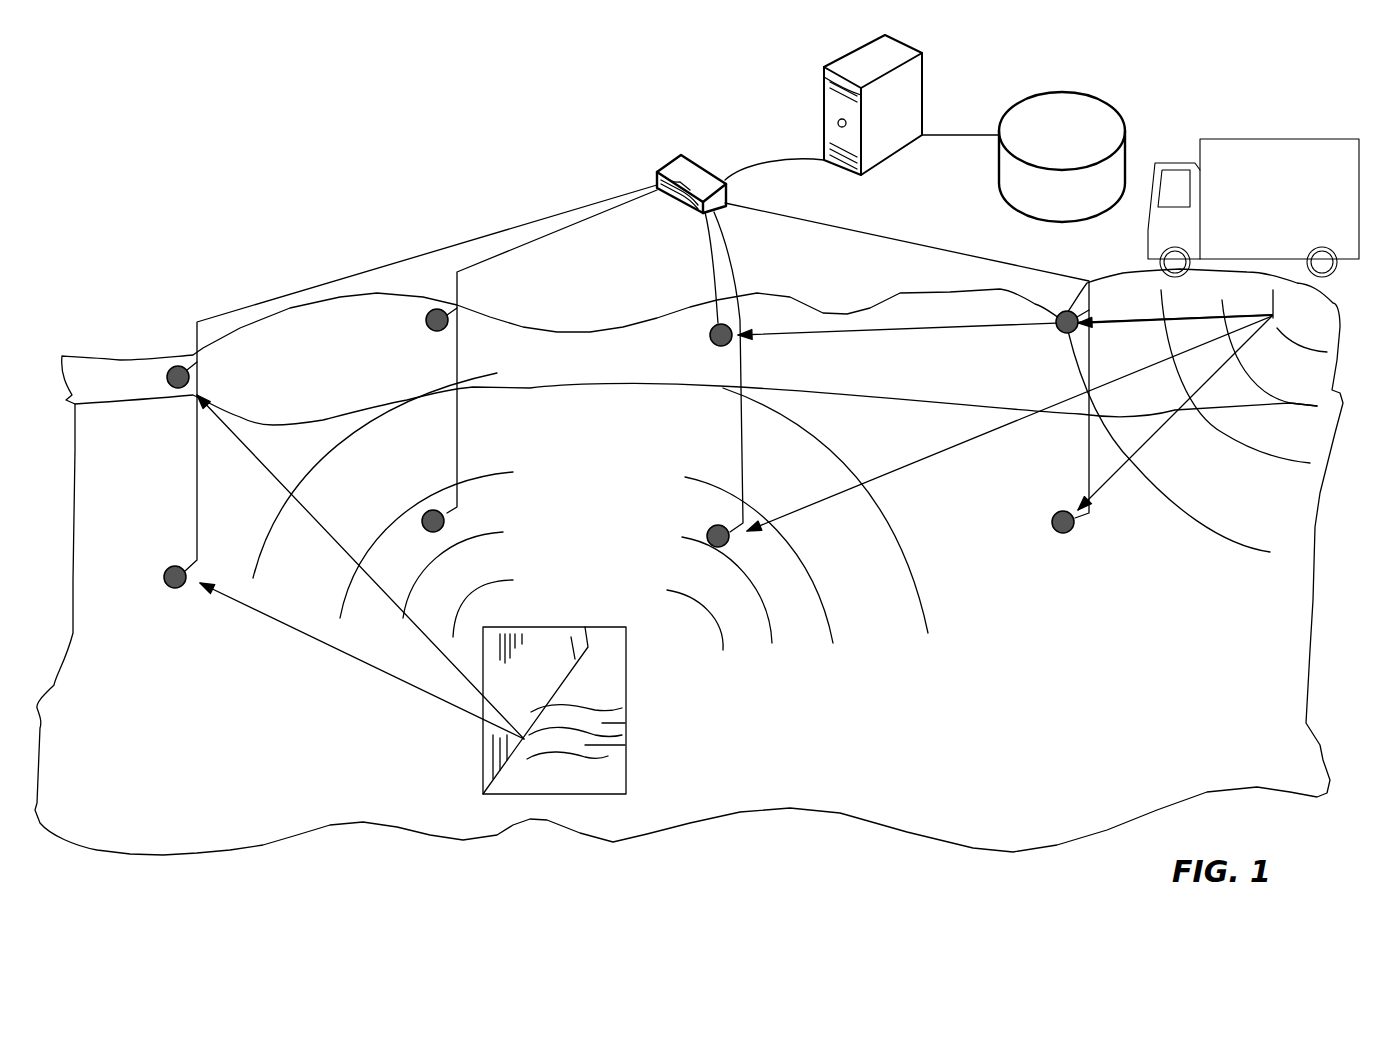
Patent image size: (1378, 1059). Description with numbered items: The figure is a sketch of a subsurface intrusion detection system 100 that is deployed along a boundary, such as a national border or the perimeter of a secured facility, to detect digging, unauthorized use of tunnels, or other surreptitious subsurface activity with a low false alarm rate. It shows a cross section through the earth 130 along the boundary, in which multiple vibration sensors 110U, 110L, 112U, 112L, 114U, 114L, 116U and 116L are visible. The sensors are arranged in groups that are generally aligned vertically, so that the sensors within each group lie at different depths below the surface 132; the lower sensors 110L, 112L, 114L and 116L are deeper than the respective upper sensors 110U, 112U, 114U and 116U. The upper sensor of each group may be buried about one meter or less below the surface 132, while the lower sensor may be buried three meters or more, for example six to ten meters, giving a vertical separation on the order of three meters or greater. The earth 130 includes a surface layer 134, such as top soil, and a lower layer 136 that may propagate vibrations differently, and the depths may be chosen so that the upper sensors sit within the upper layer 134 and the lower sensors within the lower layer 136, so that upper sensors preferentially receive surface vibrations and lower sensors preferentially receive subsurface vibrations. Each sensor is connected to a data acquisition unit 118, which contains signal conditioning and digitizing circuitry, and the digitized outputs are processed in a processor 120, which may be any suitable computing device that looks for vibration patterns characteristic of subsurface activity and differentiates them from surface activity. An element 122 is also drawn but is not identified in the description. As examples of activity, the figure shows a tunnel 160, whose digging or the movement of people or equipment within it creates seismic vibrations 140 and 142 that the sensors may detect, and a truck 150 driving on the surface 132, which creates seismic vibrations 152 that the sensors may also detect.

The subsurface intrusion detection system 100 is at (367, 141).
The vibration sensor 110U is at (178, 392).
The vibration sensor 110L is at (183, 589).
The vibration sensor 112U is at (424, 321).
The vibration sensor 112L is at (447, 523).
The vibration sensor 114U is at (716, 323).
The vibration sensor 114L is at (714, 525).
The vibration sensor 116U is at (1057, 312).
The vibration sensor 116L is at (1064, 534).
The data acquisition unit 118 is at (679, 155).
The processor 120 is at (897, 152).
The database 122 is at (1060, 92).
The earth 130 is at (118, 356).
The surface 132 is at (1123, 282).
The surface layer 134 is at (990, 382).
The lower layer 136 is at (1010, 464).
The seismic vibrations 140 is at (403, 618).
The seismic vibrations 142 is at (835, 643).
The truck 150 is at (1251, 140).
The seismic vibrations 152 is at (1273, 327).
The tunnel 160 is at (532, 795).